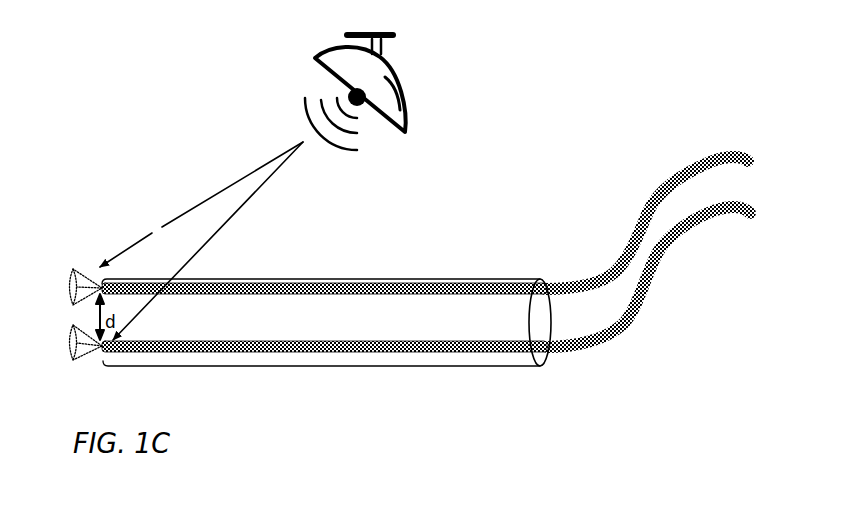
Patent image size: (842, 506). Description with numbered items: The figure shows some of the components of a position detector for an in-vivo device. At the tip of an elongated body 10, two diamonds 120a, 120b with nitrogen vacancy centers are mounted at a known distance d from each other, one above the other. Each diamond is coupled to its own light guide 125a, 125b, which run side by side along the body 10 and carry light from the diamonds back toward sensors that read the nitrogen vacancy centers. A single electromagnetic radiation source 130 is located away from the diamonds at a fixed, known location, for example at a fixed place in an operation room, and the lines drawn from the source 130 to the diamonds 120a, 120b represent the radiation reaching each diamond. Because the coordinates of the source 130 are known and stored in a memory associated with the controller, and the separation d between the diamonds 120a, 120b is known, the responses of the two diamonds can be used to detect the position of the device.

The tubular housing 10 is at (373, 303).
The diamond 120a is at (96, 266).
The diamond 120b is at (99, 357).
The light guide 125a is at (252, 281).
The light guide 125b is at (268, 345).
The EM radiation source 130 is at (373, 76).